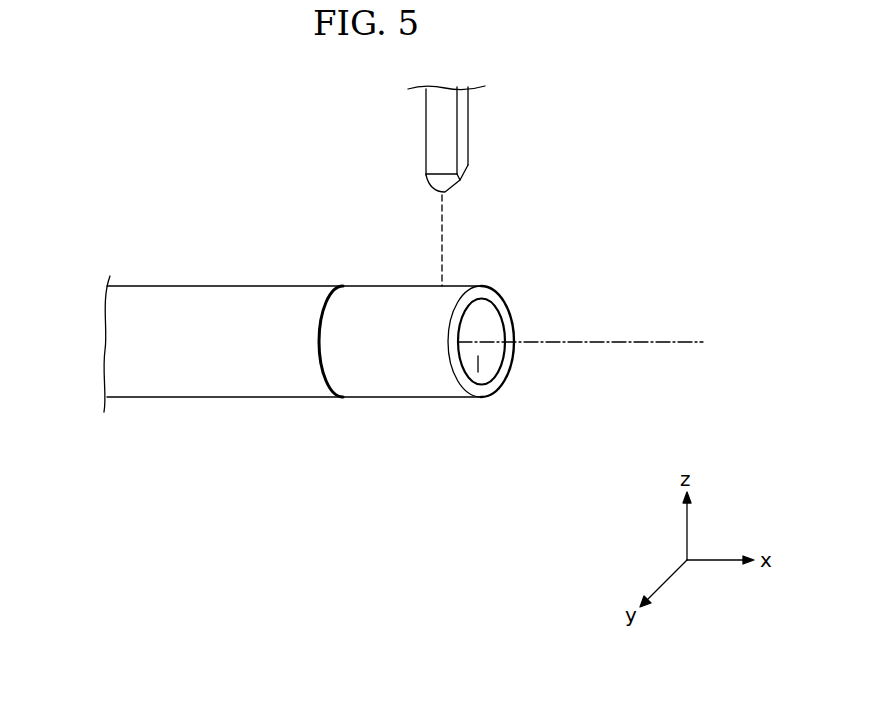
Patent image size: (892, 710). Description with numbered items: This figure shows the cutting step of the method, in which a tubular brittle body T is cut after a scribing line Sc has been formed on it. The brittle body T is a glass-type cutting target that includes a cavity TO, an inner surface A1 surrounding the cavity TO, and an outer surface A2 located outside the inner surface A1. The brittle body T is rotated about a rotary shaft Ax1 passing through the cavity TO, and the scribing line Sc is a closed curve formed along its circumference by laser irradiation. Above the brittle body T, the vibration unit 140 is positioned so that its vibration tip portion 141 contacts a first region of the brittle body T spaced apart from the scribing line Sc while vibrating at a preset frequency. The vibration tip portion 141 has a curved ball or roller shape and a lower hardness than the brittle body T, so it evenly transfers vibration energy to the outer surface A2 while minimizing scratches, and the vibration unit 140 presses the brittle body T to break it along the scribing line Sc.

The brittle body T is at (170, 278).
The scribing line Sc is at (321, 370).
The outer surface A2 is at (481, 286).
The inner surface A1 is at (478, 299).
The cavity TO is at (479, 365).
The rotary shaft Ax1 is at (688, 343).
The vibration unit 140 is at (468, 125).
The vibration tip portion 141 is at (455, 188).